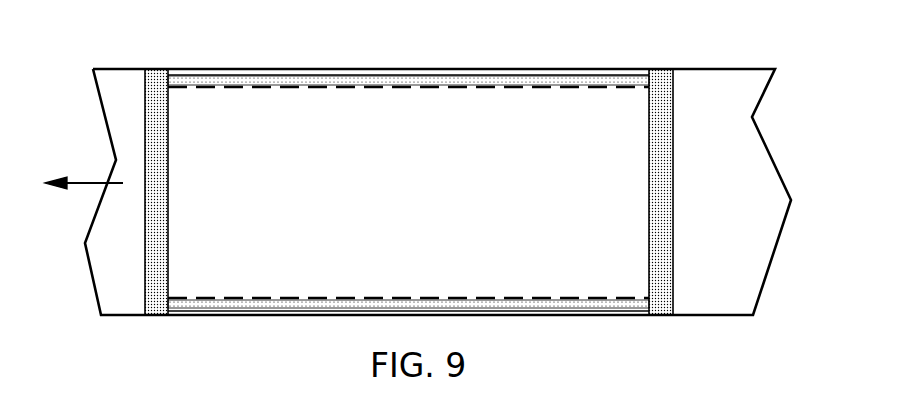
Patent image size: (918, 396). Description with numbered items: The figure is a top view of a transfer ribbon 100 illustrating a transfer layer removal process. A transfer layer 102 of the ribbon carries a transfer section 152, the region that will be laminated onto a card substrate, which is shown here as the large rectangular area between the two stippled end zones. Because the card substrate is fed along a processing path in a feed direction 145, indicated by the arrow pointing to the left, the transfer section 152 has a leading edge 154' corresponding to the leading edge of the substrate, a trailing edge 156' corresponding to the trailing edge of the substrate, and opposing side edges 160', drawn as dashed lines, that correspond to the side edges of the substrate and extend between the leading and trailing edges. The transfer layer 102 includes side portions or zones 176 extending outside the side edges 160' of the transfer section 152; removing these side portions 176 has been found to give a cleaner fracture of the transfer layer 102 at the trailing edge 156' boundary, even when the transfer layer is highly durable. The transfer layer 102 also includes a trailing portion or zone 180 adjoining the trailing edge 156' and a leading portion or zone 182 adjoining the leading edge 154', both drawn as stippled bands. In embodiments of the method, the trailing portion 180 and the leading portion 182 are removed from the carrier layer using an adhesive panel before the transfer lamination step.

The substrate structure 100 is at (719, 77).
The transfer layer 102 is at (243, 100).
The direction of movement 145 is at (78, 183).
The transfer section 152 is at (573, 103).
The leading edge 154' is at (106, 113).
The trailing edge 156' is at (696, 230).
The side edges 160' is at (408, 191).
The side portions 176 is at (348, 80).
The trailing portion 180 is at (665, 175).
The leading portion 182 is at (155, 72).